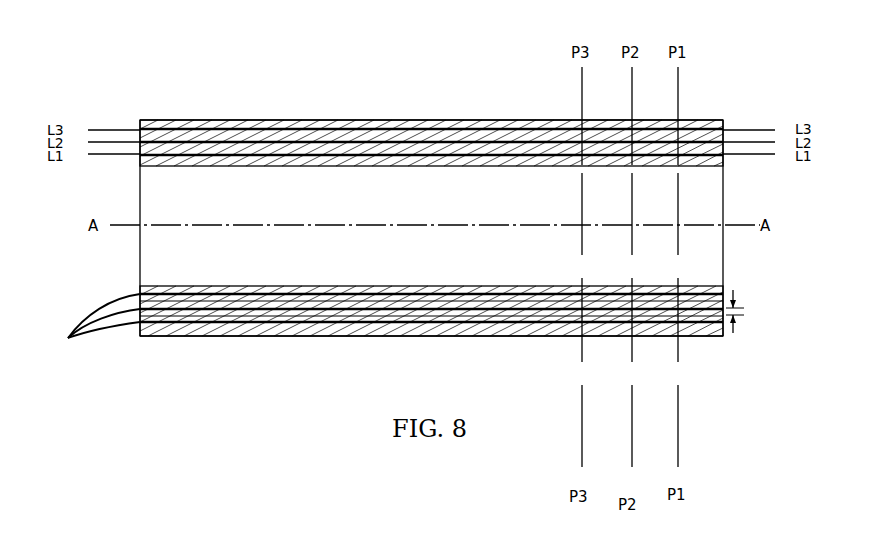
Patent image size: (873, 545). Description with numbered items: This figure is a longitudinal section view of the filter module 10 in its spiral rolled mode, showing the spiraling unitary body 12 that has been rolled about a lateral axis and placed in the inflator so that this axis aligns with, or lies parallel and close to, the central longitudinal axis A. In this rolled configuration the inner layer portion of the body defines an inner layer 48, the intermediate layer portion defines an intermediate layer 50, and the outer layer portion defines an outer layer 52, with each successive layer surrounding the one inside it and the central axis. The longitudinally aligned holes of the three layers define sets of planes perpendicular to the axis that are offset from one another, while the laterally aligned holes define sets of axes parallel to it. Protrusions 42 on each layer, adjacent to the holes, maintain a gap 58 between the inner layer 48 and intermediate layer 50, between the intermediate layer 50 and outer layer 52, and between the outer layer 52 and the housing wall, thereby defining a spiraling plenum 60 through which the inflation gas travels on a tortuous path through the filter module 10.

The filter module 10 is at (92, 268).
The unitary body 12 is at (148, 210).
The protrusion 42 is at (255, 150).
The inner layer 48 is at (222, 166).
The intermediate layer 50 is at (372, 150).
The outer layer 52 is at (140, 118).
The gap 58 is at (734, 323).
The spiraling plenum 60 is at (104, 326).